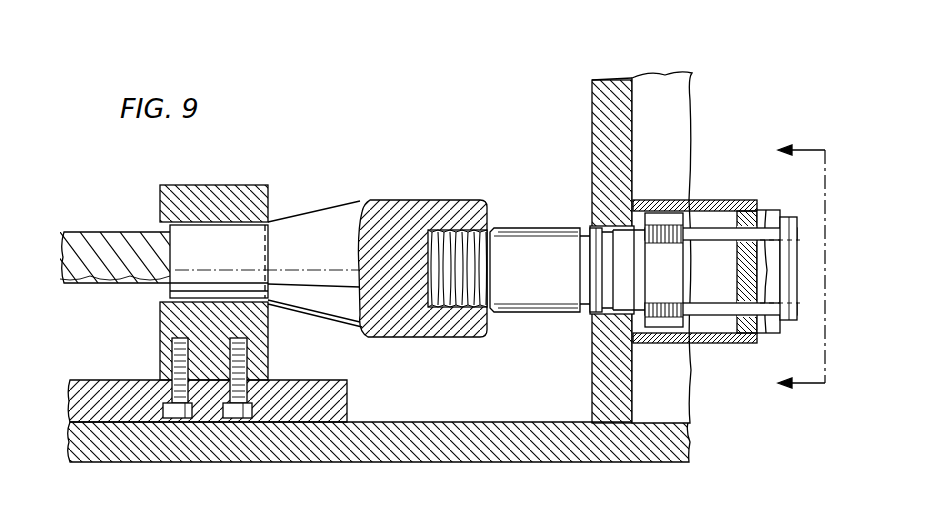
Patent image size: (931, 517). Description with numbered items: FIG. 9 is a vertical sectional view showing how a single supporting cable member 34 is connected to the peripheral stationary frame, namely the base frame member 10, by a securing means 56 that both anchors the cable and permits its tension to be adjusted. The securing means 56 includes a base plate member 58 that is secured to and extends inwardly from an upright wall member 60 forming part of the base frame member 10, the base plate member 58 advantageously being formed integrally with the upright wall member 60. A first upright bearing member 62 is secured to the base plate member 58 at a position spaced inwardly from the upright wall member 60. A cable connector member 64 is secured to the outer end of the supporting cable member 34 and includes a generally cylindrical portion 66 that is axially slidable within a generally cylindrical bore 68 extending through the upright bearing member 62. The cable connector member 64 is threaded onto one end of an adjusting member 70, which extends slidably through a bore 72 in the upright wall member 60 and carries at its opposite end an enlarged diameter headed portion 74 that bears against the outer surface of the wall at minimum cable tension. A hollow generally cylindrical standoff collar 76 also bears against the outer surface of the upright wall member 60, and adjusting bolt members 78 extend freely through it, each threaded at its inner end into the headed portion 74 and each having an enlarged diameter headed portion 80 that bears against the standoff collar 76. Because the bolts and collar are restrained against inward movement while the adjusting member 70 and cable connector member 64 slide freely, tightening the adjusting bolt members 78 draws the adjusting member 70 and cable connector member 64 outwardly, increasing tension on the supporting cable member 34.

The base frame member 10 is at (786, 273).
The supporting cable member 34 is at (100, 231).
The securing means 56 is at (724, 86).
The base plate member 58 is at (458, 463).
The upright wall member 60 is at (592, 137).
The upright bearing member 62 is at (248, 186).
The cable connector member 64 is at (340, 210).
The generally cylindrical portion 66 is at (254, 236).
The generally cylindrical bore 68 is at (162, 230).
The adjusting member 70 is at (551, 228).
The bore 72 is at (590, 316).
The enlarged diameter headed portion 74 is at (686, 272).
The generally cylindrical standoff collar 76 is at (712, 200).
The adjusting bolt member 78 is at (712, 343).
The enlarged diameter headed portion 80 is at (798, 226).